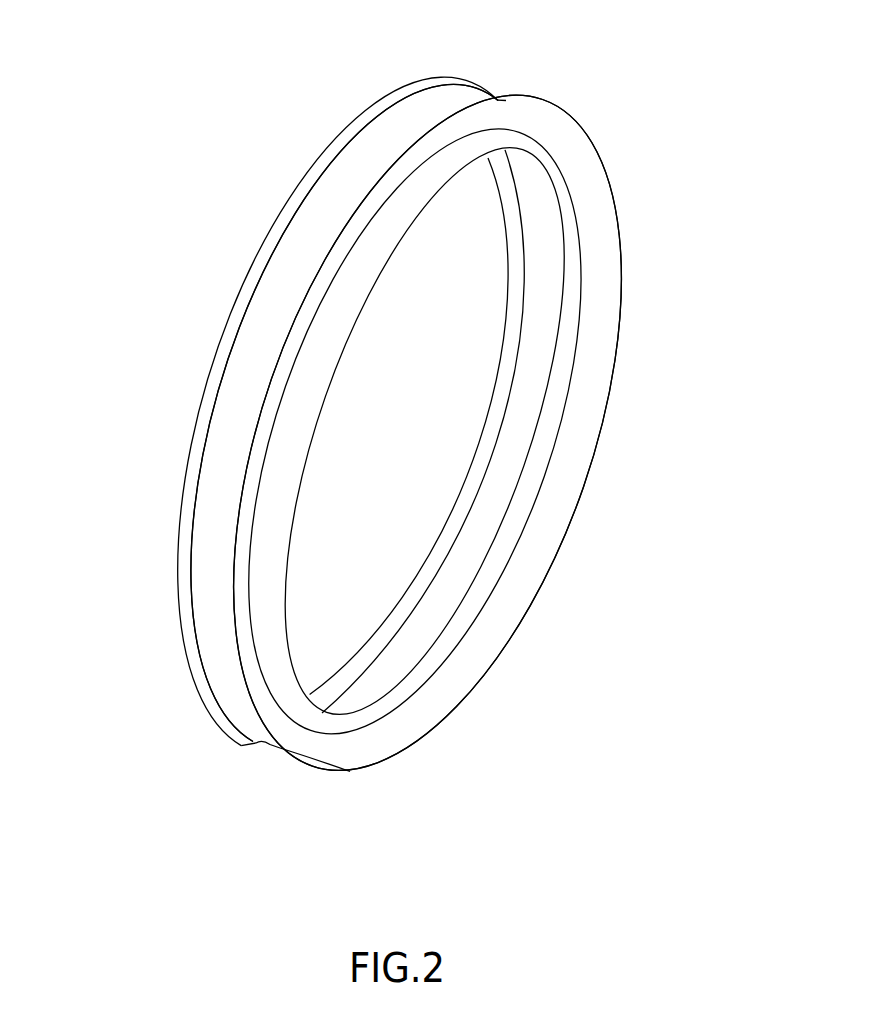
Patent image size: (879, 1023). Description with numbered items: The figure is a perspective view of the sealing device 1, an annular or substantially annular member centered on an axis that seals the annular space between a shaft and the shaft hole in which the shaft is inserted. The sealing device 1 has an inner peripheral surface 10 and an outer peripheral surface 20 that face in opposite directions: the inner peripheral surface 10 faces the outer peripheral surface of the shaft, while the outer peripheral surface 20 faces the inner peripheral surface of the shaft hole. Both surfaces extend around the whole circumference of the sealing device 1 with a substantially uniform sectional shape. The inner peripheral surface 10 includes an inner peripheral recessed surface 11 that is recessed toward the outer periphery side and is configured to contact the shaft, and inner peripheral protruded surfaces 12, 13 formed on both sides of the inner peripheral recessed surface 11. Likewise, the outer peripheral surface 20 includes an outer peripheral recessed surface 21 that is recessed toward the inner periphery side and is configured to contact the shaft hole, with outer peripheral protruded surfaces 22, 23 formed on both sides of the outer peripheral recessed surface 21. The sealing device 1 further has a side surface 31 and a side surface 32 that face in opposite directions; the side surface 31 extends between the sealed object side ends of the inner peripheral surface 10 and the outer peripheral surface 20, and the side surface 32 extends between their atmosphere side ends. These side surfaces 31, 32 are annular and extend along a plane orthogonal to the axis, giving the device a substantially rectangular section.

The sealing device 1 is at (420, 848).
The inner peripheral surface 10 is at (427, 433).
The inner peripheral recessed surface 11 is at (550, 270).
The inner peripheral protruded surface 12 is at (555, 424).
The inner peripheral protruded surface 13 is at (488, 425).
The outer peripheral surface 20 is at (383, 412).
The outer peripheral recessed surface 21 is at (212, 556).
The outer peripheral protruded surface 22 is at (381, 192).
The outer peripheral protruded surface 23 is at (303, 192).
The side surface 31 is at (558, 502).
The side surface 32 is at (228, 444).